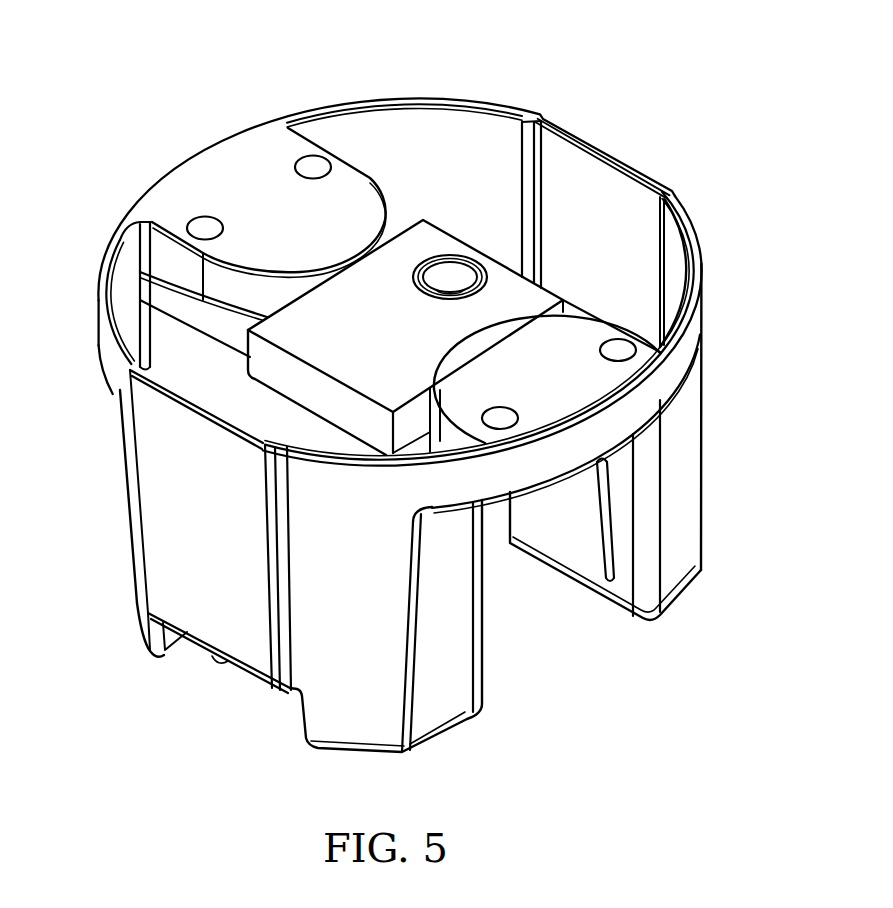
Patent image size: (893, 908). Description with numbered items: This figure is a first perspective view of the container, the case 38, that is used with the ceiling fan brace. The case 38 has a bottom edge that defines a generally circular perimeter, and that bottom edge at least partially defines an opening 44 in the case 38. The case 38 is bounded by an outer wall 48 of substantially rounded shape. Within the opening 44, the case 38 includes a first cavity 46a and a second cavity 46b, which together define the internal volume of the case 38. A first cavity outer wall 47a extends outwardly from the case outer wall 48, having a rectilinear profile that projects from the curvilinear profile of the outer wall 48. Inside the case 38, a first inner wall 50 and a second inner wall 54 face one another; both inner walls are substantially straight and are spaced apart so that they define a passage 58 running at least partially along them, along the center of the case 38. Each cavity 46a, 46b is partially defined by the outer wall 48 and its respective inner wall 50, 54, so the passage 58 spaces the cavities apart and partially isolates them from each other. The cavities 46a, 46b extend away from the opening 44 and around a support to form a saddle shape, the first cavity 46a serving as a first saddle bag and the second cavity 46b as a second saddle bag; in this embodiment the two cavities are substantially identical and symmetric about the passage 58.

The case 38 is at (122, 82).
The opening 44 is at (455, 160).
The first cavity 46a is at (180, 568).
The second cavity 46b is at (678, 452).
The first cavity outer wall 47a is at (180, 478).
The outer wall 48 is at (113, 360).
The first inner wall 50 is at (486, 634).
The second inner wall 54 is at (622, 513).
The passage 58 is at (550, 612).